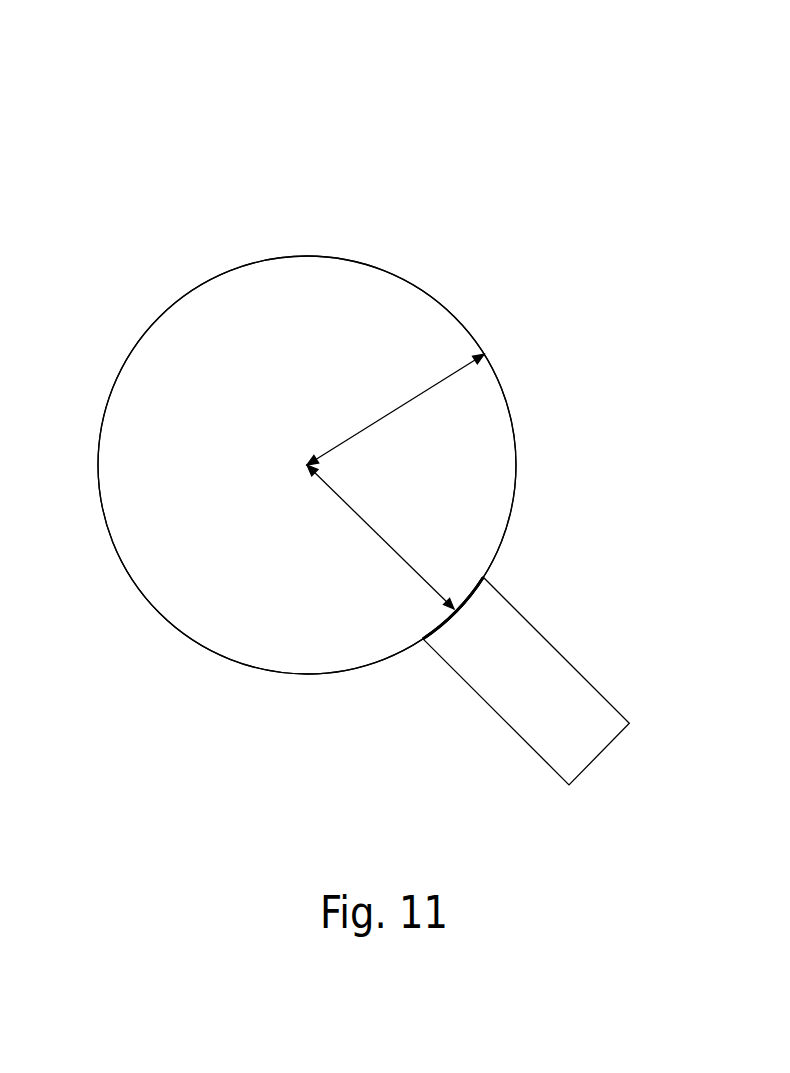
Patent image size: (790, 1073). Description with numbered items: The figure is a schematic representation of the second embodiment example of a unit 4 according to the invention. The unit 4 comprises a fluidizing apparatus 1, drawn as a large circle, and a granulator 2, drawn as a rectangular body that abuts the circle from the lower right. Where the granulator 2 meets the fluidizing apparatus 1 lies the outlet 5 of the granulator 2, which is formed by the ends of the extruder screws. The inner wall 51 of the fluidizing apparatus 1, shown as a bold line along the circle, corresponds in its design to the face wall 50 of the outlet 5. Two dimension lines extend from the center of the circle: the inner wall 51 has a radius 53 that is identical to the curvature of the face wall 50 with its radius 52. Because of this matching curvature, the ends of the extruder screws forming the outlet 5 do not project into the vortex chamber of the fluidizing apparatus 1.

The fluidizing apparatus 1 is at (122, 326).
The granulator 2 is at (589, 677).
The unit 4 is at (238, 148).
The outlet 5 is at (420, 650).
The face wall 50 is at (462, 578).
The inner wall 51 is at (554, 553).
The radius 52 is at (380, 537).
The radius 53 is at (395, 409).